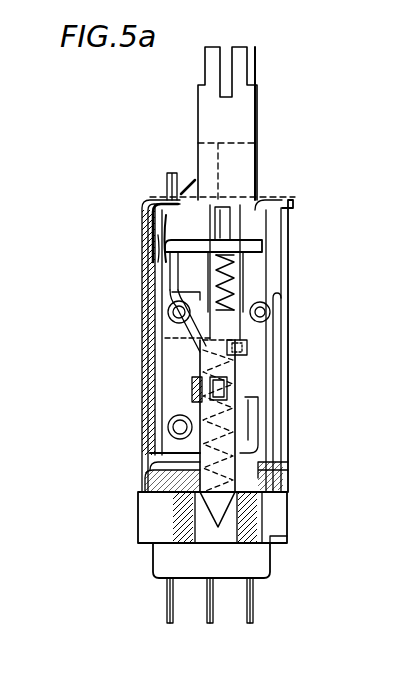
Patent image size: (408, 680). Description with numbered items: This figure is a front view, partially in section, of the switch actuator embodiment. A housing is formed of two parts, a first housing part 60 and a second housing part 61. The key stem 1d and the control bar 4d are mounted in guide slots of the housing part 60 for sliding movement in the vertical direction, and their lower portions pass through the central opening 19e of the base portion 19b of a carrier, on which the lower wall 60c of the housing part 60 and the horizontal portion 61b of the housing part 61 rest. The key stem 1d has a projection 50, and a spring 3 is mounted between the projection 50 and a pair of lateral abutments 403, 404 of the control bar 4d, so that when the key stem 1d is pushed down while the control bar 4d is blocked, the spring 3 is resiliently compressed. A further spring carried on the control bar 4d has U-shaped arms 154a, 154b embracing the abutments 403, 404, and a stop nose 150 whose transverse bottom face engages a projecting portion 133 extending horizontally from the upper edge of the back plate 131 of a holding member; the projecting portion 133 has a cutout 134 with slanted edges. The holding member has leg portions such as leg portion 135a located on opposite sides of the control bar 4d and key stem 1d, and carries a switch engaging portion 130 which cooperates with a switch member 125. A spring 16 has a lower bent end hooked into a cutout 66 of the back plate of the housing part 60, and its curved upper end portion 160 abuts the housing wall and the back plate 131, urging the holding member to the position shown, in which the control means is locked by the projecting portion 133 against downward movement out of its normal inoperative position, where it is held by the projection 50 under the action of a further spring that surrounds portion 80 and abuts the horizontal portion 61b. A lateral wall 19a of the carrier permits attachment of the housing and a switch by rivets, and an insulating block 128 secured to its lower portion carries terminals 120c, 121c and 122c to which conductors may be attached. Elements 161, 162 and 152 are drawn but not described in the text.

The key stem 1d is at (256, 117).
The control bar 4d is at (256, 147).
The switch member 125 is at (188, 184).
The switch engaging portion 130 is at (170, 186).
The upper end portion of spring 16 160 is at (147, 210).
The cutout 134 is at (150, 245).
The contact leg 161 is at (166, 268).
The back plate 131 is at (172, 283).
The leg portion 135a is at (175, 300).
The lateral abutment 403 is at (165, 338).
The spring 16 is at (196, 352).
The U-shaped arm 154a is at (190, 372).
The housing part 60 is at (148, 398).
The cutout 66 is at (125, 452).
The bottom wall 162 is at (140, 462).
The lower wall 60c is at (140, 500).
The portion 80 is at (160, 515).
The terminal 121c is at (166, 605).
The terminal 122c is at (208, 600).
The terminal 120c is at (254, 596).
The insulating block 128 is at (258, 560).
The central opening 19e is at (288, 538).
The base portion 19b is at (276, 520).
The horizontal portion 61b is at (284, 496).
The lateral wall 19a is at (283, 455).
The housing part 61 is at (270, 430).
The engaging portion 152 is at (230, 390).
The U-shaped arm 154b is at (262, 362).
The lateral abutment 404 is at (248, 342).
The spring 3 is at (255, 270).
The projection 50 is at (242, 262).
The projecting portion 133 is at (262, 238).
The stop nose 150 is at (256, 176).